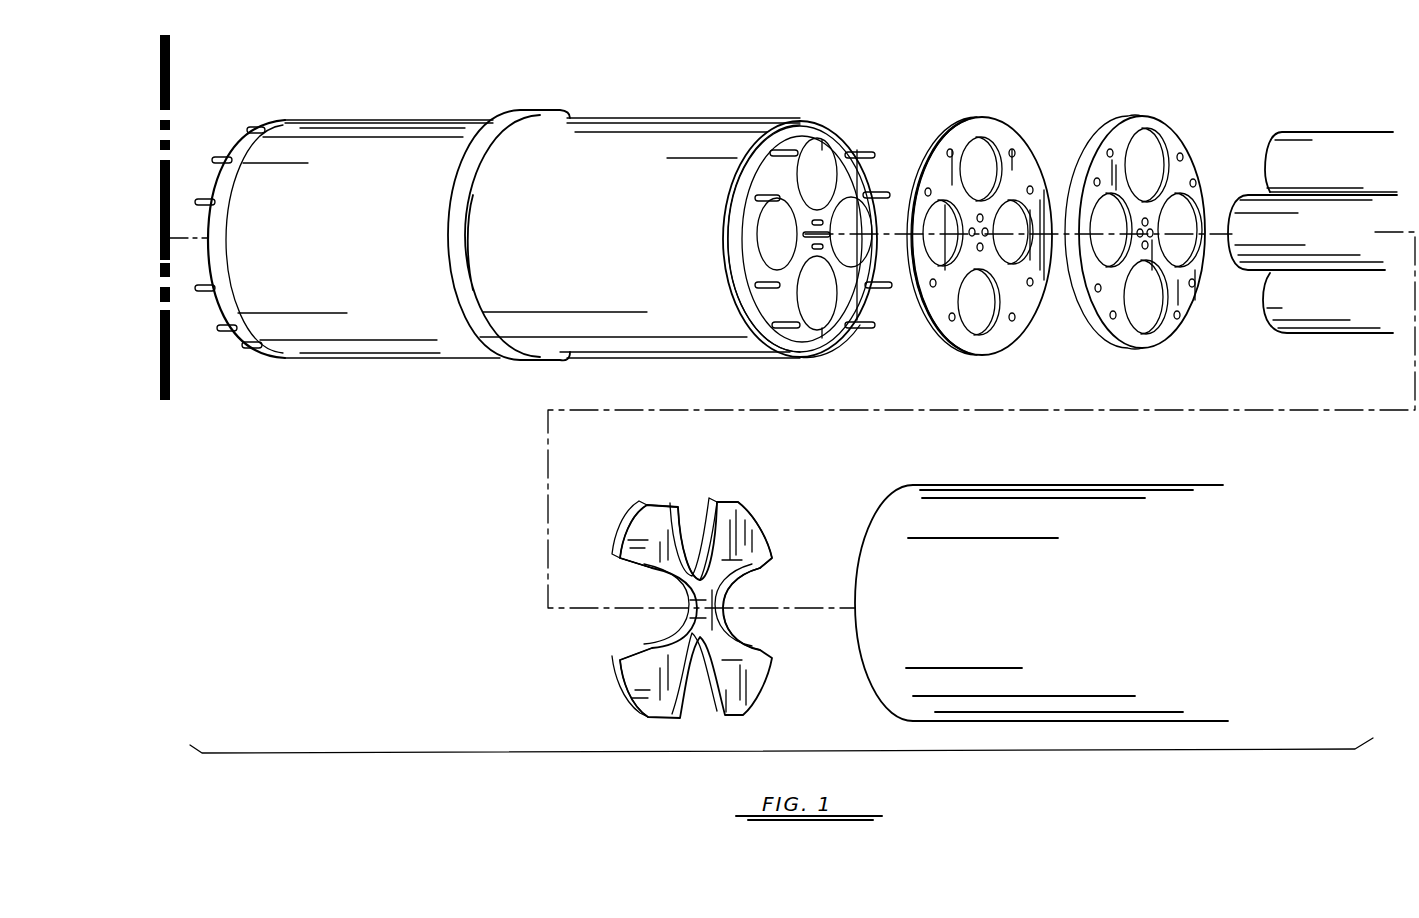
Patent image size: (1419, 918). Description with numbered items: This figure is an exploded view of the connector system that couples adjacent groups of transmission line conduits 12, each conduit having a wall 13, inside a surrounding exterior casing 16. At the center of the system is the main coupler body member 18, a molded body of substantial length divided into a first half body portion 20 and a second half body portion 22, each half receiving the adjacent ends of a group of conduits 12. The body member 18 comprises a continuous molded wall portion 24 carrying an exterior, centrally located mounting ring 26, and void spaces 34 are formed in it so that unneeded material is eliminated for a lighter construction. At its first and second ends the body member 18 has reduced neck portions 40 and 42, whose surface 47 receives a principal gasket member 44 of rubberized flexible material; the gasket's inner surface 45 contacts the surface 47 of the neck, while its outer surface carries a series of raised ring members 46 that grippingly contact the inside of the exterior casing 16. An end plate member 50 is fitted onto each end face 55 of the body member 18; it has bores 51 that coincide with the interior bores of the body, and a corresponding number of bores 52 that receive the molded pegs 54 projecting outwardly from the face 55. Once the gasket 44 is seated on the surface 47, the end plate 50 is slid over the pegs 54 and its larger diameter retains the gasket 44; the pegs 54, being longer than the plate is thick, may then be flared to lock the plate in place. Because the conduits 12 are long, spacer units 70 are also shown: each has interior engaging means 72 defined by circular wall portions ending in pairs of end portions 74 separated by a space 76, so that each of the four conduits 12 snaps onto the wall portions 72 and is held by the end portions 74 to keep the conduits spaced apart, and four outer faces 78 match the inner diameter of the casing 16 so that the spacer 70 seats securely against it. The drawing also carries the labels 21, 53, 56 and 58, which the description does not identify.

The transmission line conduit 12 is at (1285, 165).
The conduit wall 13 is at (1353, 143).
The exterior casing 16 is at (930, 520).
The main coupler body member 18 is at (571, 96).
The first half body portion 20 is at (630, 127).
The sleeve interior 21 is at (1055, 610).
The second half body portion 22 is at (345, 135).
The continuous molded wall portion 24 is at (740, 130).
The mounting ring 26 is at (475, 318).
The void spaces 34 is at (780, 302).
The reduced neck portion 40 is at (782, 130).
The reduced neck portion 42 is at (242, 155).
The principal gasket member 44 is at (973, 123).
The gasket inner surface 45 is at (1015, 178).
The raised ring members 46 is at (935, 128).
The neck surface 47 is at (237, 318).
The end plate member 50 is at (1125, 140).
The end plate bores 51 is at (1150, 127).
The peg bores 52 is at (1097, 146).
The disk face 53 is at (1103, 302).
The molded pegs 54 is at (862, 150).
The end face 55 is at (215, 190).
The small hole 56 is at (1098, 178).
The rim 58 is at (722, 252).
The spacer unit 70 is at (645, 703).
The interior engaging means 72 is at (722, 537).
The end portions 74 is at (634, 573).
The space 76 is at (766, 645).
The outer faces 78 is at (646, 522).